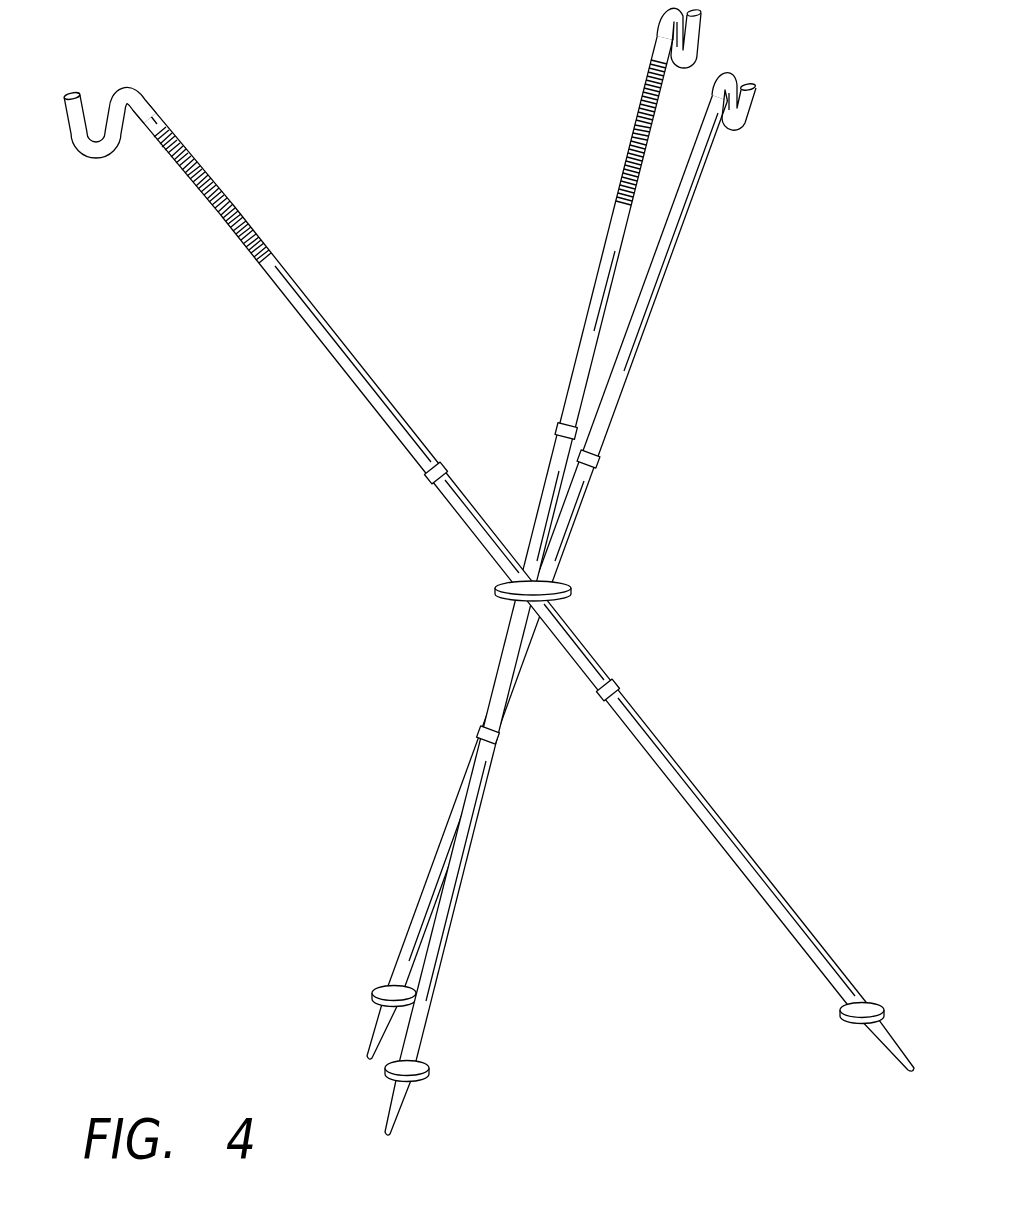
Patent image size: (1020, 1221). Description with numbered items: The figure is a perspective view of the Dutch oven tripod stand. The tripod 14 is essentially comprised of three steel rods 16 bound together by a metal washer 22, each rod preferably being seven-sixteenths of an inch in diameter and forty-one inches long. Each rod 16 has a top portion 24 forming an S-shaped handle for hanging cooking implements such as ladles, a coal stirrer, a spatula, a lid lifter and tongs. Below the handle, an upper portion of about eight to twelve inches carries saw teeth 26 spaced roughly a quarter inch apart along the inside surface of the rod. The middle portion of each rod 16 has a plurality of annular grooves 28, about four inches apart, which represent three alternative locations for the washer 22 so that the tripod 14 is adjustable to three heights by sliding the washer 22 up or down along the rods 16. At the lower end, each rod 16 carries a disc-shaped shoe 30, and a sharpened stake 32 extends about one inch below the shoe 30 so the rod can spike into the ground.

The tripod 14 is at (489, 573).
The steel rod 16 is at (618, 380).
The metal washer 22 is at (575, 590).
The top portion 24 is at (175, 33).
The saw teeth 26 is at (639, 108).
The annular grooves 28 is at (556, 430).
The disc-shaped shoe 30 is at (518, 1037).
The sharpened stake 32 is at (392, 1121).